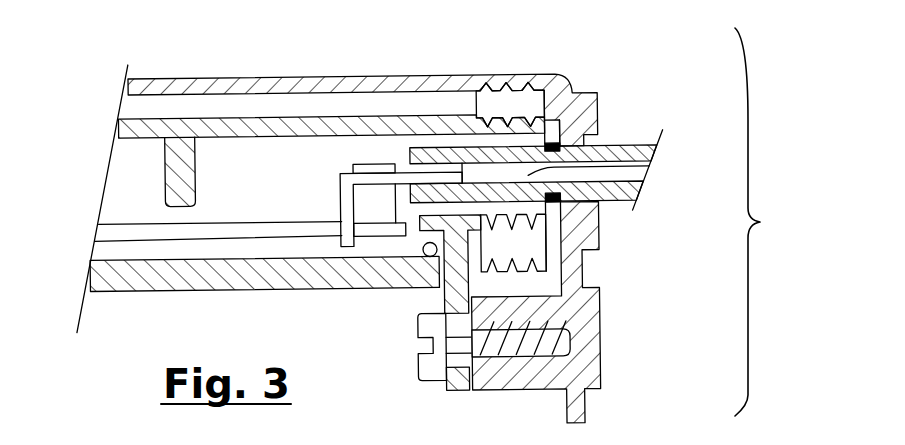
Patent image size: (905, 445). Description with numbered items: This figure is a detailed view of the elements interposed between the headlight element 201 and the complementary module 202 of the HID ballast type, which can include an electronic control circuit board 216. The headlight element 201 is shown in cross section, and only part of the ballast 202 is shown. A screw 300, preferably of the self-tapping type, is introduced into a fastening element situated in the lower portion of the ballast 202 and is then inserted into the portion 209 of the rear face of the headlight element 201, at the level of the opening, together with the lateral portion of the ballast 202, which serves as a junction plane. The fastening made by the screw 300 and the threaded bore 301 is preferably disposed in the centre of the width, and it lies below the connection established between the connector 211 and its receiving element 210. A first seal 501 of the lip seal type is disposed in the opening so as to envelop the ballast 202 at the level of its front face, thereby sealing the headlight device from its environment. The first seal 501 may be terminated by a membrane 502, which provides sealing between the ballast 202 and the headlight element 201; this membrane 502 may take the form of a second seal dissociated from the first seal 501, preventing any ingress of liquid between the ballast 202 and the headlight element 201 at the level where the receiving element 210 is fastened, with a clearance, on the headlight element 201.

The headlight element 201 is at (438, 78).
The complementary module 202 is at (116, 122).
The portion of the rear surface 209 is at (781, 222).
The receiving element 210 is at (652, 171).
The connector 211 is at (347, 192).
The electronic control circuit board 216 is at (254, 231).
The screw 300 is at (417, 369).
The threaded bore 301 is at (560, 377).
The first seal 501 is at (548, 100).
The membrane 502 is at (565, 117).